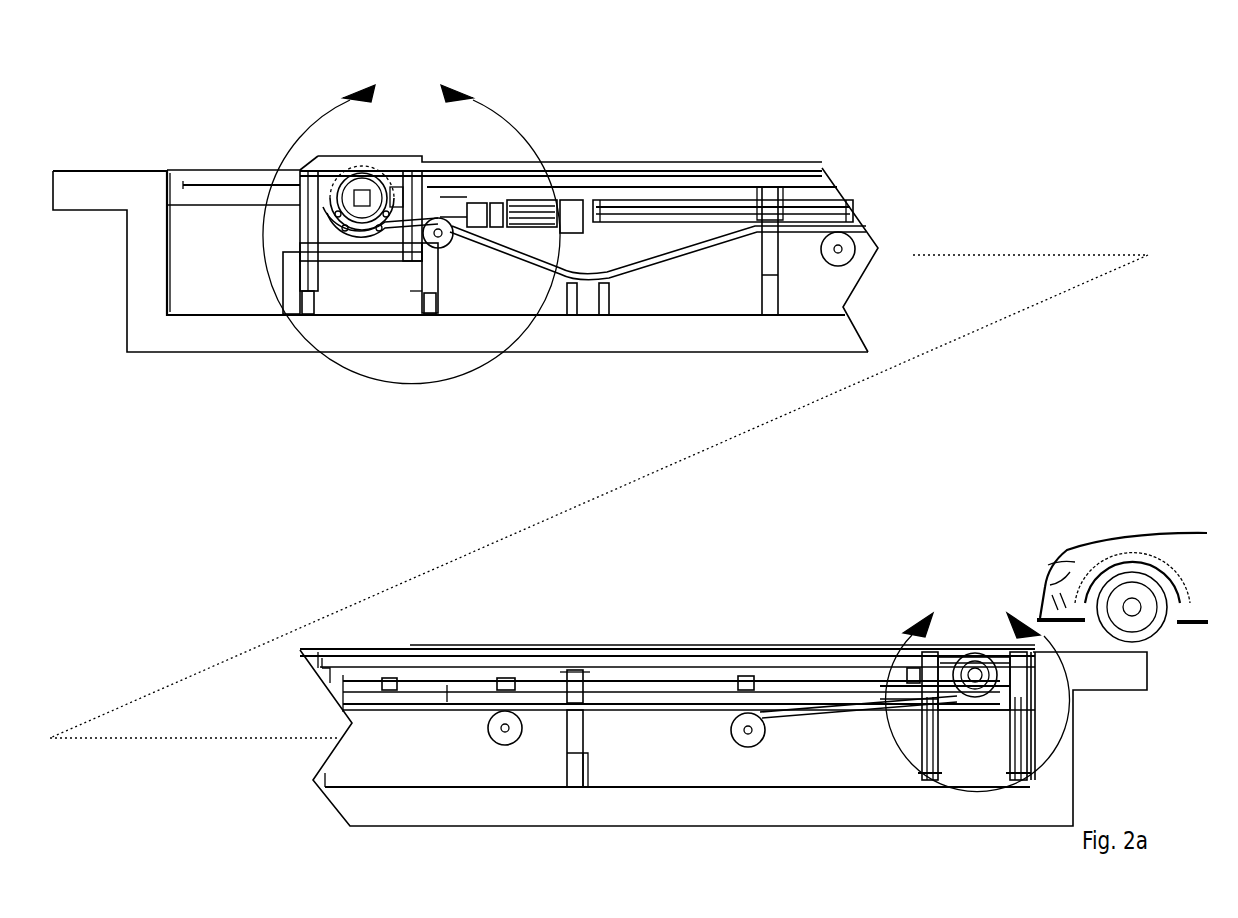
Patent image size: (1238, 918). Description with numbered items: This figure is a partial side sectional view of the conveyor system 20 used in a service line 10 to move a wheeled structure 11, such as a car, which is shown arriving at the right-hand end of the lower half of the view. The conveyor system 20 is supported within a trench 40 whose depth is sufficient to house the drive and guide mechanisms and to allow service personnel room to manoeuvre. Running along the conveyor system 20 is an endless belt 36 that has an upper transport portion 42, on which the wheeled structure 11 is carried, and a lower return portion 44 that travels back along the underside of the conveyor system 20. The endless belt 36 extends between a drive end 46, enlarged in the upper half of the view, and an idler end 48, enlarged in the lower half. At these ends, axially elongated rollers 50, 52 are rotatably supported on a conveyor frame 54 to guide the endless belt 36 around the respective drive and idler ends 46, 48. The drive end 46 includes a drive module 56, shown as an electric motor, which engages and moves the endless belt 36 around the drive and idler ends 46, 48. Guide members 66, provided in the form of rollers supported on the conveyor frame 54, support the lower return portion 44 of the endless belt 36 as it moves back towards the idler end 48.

The service line 10 is at (985, 108).
The wheeled structure 11 is at (1125, 540).
The conveyor system 20 is at (270, 98).
The endless belt 36 is at (803, 172).
The trench 40 is at (213, 293).
The upper transport portion 42 is at (730, 170).
The lower return portion 44 is at (672, 258).
The drive end 46 is at (305, 167).
The idler end 48 is at (985, 652).
The roller 50 is at (355, 187).
The roller 52 is at (982, 697).
The conveyor frame 54 is at (760, 255).
The drive module 56 is at (535, 230).
The guide members 66 is at (828, 262).